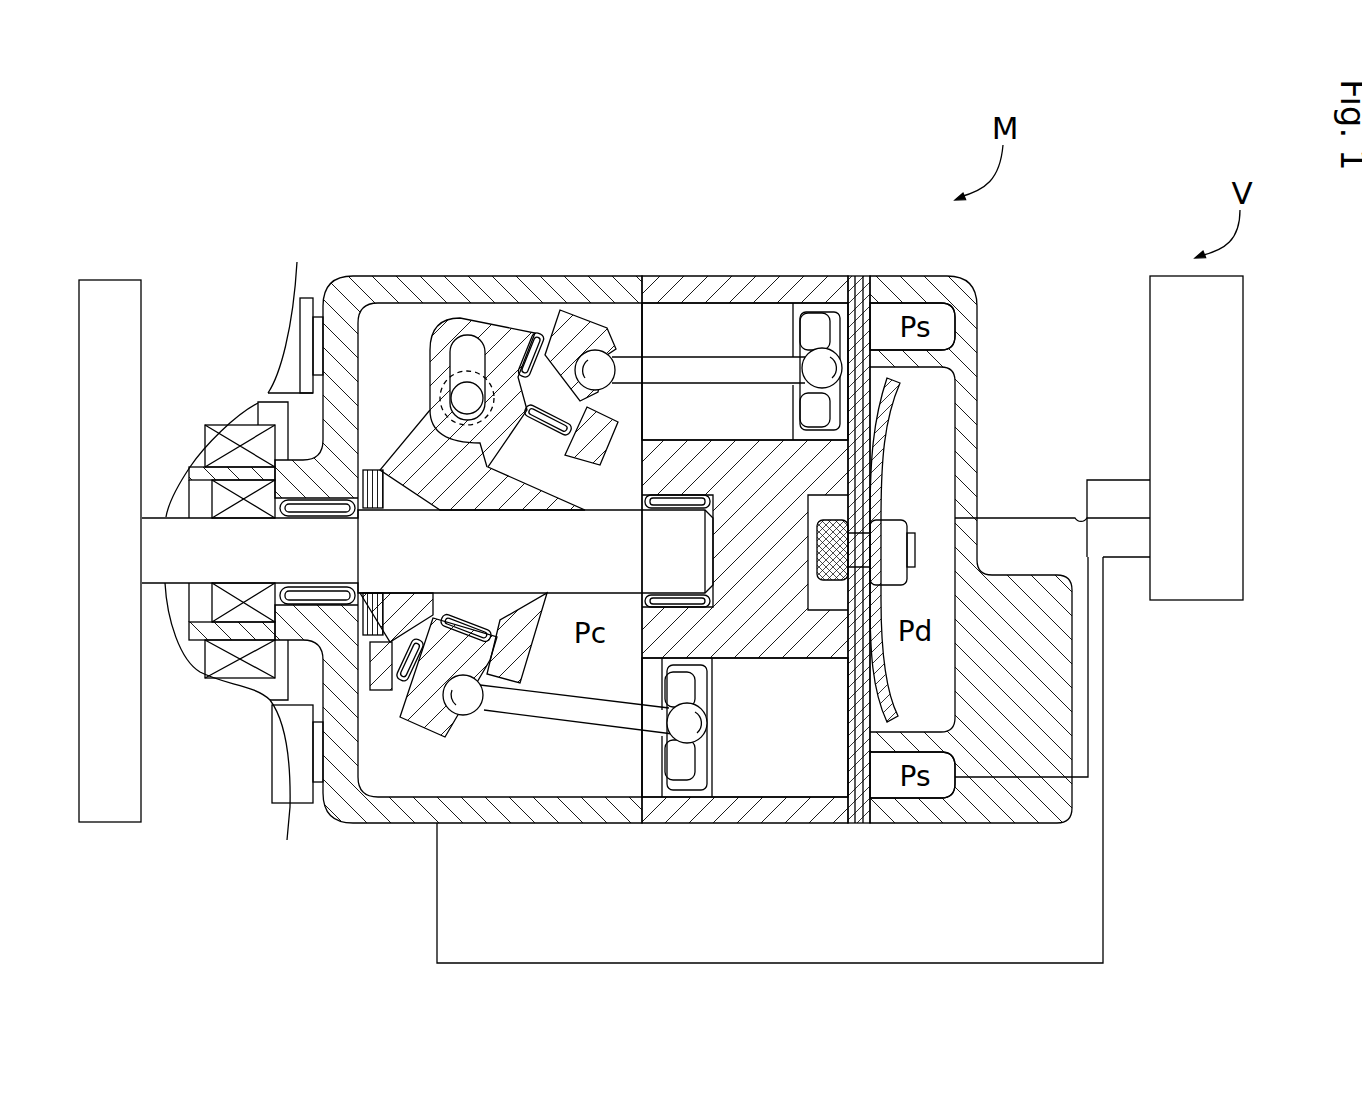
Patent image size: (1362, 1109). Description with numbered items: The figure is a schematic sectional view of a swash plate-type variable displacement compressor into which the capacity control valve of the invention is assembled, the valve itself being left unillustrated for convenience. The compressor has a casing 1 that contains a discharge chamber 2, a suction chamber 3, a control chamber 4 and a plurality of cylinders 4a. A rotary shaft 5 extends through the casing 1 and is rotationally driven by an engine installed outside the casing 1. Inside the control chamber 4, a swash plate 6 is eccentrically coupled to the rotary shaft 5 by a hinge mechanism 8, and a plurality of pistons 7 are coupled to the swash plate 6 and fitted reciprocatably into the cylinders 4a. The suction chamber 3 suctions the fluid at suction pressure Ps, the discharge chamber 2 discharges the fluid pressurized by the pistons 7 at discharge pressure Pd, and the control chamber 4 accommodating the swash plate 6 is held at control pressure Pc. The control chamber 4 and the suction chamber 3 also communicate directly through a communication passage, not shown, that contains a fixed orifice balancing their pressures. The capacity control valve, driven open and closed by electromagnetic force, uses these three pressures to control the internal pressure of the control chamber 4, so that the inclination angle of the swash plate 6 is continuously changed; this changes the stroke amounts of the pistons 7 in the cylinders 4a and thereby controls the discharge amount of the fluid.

The casing 1 is at (364, 266).
The discharge chamber 2 is at (935, 472).
The suction chamber 3 is at (1040, 273).
The control chamber 4 is at (558, 773).
The cylinders 4a is at (715, 318).
The rotary shaft 5 is at (392, 555).
The swash plate 6 is at (553, 445).
The pistons 7 is at (828, 300).
The hinge mechanism 8 is at (407, 460).